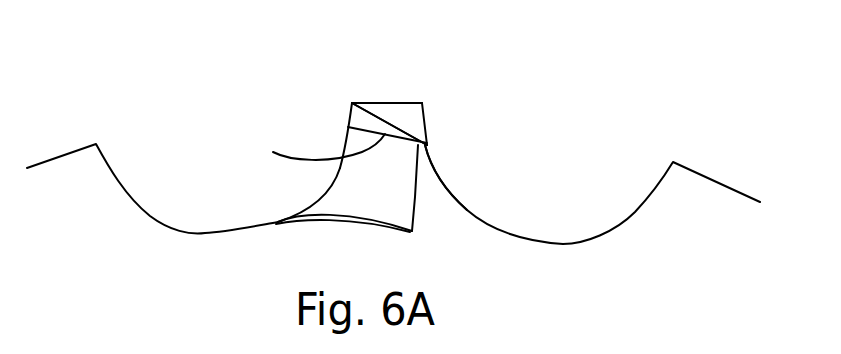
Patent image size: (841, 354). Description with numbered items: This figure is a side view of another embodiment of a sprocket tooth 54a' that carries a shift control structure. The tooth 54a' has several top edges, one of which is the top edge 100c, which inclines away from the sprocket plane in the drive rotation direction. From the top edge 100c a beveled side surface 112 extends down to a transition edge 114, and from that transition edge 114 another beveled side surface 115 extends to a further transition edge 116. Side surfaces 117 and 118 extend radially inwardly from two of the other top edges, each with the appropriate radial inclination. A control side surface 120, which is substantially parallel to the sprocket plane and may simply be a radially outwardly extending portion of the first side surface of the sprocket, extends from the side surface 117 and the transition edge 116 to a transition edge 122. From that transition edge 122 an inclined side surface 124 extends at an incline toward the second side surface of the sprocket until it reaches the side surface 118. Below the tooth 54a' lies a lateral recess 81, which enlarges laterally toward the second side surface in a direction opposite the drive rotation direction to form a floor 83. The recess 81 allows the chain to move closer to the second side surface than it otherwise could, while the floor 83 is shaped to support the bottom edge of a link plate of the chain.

The tooth 54a' is at (393, 149).
The top edge 100c is at (388, 103).
The beveled side surface 112 is at (415, 113).
The transition edge 114 is at (373, 103).
The beveled side surface 115 is at (357, 120).
The transition edge 116 is at (309, 150).
The side surface 117 is at (428, 142).
The side surface 118 is at (349, 127).
The control side surface 120 is at (425, 177).
The transition edge 122 is at (413, 203).
The inclined side surface 124 is at (345, 183).
The lateral recess 81 is at (290, 223).
The floor 83 is at (342, 225).